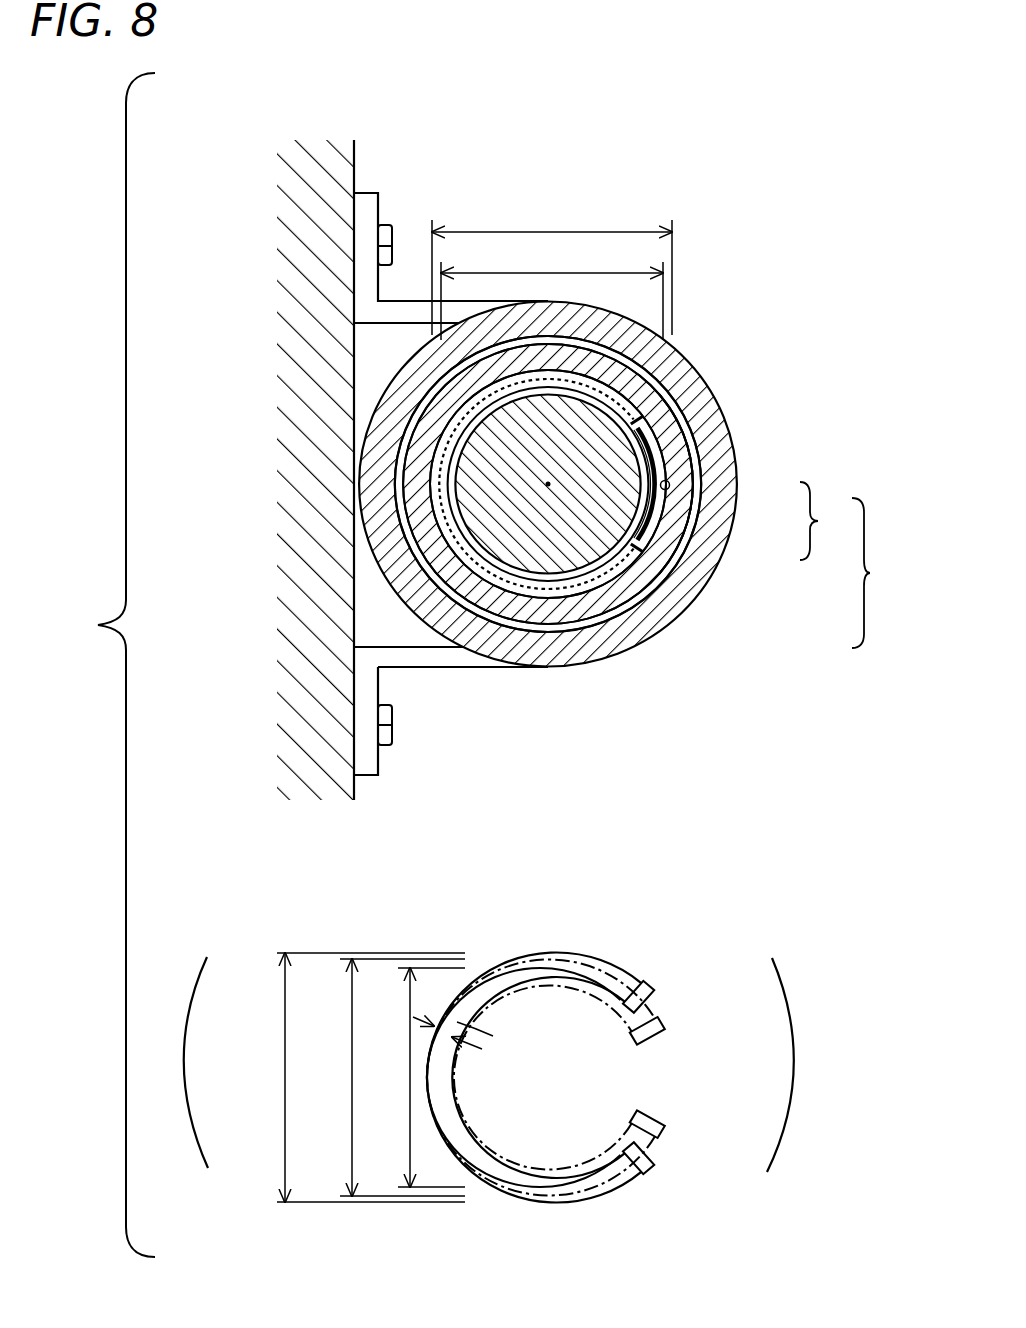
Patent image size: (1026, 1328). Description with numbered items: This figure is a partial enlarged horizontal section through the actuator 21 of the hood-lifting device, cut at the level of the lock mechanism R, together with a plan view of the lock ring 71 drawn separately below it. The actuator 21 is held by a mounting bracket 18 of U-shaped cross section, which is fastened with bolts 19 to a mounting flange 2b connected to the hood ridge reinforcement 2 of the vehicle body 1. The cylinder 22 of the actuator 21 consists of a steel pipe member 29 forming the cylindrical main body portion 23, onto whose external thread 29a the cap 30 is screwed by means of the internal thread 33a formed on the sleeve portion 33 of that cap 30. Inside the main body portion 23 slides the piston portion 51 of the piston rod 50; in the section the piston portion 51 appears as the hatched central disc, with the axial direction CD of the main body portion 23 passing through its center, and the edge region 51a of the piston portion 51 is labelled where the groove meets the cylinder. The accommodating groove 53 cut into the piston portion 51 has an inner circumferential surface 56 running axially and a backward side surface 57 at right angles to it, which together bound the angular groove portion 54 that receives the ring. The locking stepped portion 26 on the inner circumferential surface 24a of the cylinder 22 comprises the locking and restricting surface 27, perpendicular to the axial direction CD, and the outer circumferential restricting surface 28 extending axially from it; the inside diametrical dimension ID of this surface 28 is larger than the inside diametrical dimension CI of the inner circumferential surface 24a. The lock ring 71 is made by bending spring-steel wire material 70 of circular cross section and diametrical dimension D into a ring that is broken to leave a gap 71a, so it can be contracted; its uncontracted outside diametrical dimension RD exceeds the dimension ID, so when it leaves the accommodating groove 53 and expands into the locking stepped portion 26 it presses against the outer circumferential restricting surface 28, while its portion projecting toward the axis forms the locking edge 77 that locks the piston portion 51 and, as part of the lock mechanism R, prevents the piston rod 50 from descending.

The compressor 1 is at (300, 637).
The hood ridge reinforcement 2 is at (254, 470).
The mounting flange 2b is at (254, 470).
The mounting bracket 18 is at (368, 205).
The bolt 19 is at (383, 222).
The actuator 21 is at (523, 766).
The cylinder 22 is at (420, 535).
The main body portion 23 is at (420, 535).
The steel pipe member 29 is at (417, 433).
The internal thread 33a is at (429, 484).
The external thread 29a is at (395, 477).
The cap 30 is at (629, 484).
The sleeve portion 33 is at (717, 465).
The backward side surface 57 is at (683, 440).
The end of snap ring groove 51a is at (642, 427).
The locking stepped portion 26 is at (643, 484).
The locking and restricting surface 27 is at (657, 515).
The outer circumferential restricting surface 28 is at (672, 485).
The inner circumferential surface 24a is at (637, 547).
The lock ring 71 is at (630, 795).
The locking edge 77 is at (605, 585).
The gap 71a is at (640, 1080).
The wire material 70 is at (438, 1103).
The piston rod 50 is at (547, 562).
The piston portion 51 is at (556, 548).
The inner circumferential surface 56 is at (586, 542).
The accommodating groove 53 is at (586, 553).
The angular groove portion 54 is at (628, 556).
The axial direction CD is at (548, 484).
The inside diametrical dimension ID is at (496, 700).
The inside diametrical dimension CI is at (520, 716).
The outside diametrical dimension RD is at (352, 1077).
The diametrical dimension D is at (464, 1034).
The lock mechanism R is at (874, 573).